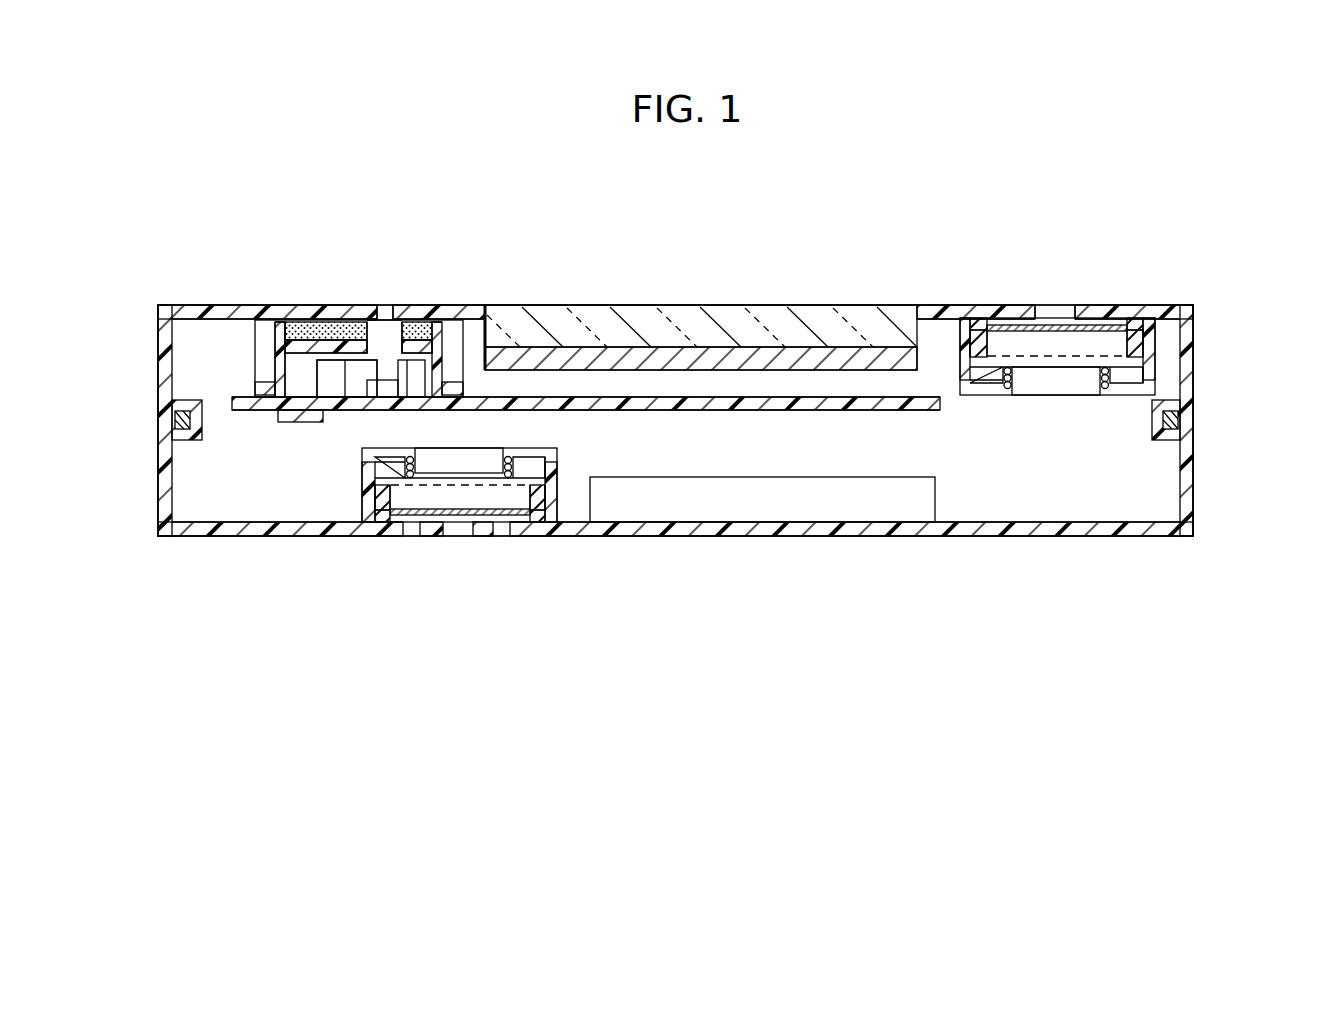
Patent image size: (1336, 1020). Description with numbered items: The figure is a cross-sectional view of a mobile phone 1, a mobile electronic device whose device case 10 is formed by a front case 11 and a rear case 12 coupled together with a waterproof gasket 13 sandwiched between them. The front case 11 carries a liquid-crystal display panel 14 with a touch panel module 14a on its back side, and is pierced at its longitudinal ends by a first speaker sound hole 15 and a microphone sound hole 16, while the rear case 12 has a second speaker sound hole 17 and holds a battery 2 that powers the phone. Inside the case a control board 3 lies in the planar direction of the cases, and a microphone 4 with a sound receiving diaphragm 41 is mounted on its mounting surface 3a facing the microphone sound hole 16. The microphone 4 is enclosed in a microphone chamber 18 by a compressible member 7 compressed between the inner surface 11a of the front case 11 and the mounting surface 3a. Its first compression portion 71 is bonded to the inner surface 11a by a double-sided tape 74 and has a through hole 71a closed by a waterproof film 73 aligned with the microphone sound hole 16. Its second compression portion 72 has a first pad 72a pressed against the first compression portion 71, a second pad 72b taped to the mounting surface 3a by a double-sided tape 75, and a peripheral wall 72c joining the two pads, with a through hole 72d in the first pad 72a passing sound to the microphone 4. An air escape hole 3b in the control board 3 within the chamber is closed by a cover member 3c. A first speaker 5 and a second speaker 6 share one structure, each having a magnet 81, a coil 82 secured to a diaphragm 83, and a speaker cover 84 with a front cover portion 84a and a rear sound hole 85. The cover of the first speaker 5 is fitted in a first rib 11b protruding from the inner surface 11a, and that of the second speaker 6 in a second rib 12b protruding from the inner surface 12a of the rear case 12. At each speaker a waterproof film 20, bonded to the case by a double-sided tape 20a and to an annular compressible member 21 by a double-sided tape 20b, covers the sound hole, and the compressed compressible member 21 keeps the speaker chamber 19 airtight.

The mobile phone 1 is at (1037, 148).
The battery 2 is at (770, 500).
The control board 3 is at (805, 405).
The mounting surface 3a is at (660, 395).
The air escape hole 3b is at (280, 412).
The cover member 3c is at (300, 422).
The microphone 4 is at (440, 365).
The sound receiving diaphragm 41 is at (345, 397).
The first speaker 5 is at (1061, 405).
The second speaker 6 is at (566, 450).
The compressible member 7 is at (170, 198).
The first compression portion 71 is at (262, 314).
The through hole 71a is at (372, 318).
The second compression portion 72 is at (266, 358).
The first pad 72a is at (280, 336).
The second pad 72b is at (262, 395).
The peripheral wall 72c is at (268, 372).
The through hole 72d is at (392, 386).
The waterproof film 73 is at (398, 318).
The double-sided tape 74 is at (320, 330).
The double-sided tape 75 is at (262, 390).
The device case 10 is at (1300, 352).
The front case 11 is at (165, 350).
The inner surface 11a is at (178, 322).
The first rib 11b is at (963, 335).
The rear case 12 is at (165, 455).
The inner surface 12a is at (1000, 525).
The second rib 12b is at (365, 470).
The waterproof gasket 13 is at (180, 420).
The liquid-crystal display panel 14 is at (597, 323).
The touch panel module 14a is at (748, 358).
The first speaker sound hole 15 is at (1040, 316).
The microphone sound hole 16 is at (385, 308).
The second speaker sound hole 17 is at (430, 536).
The microphone chamber 18 is at (300, 345).
The speaker chamber 19 is at (1065, 326).
The waterproof film 20 is at (985, 340).
The double-sided tape 20a is at (978, 345).
The double-sided tape 20b is at (975, 320).
The compressible member 21 is at (972, 322).
The magnet 81 is at (1045, 395).
The coil 82 is at (1010, 388).
The diaphragm 83 is at (1128, 372).
The speaker cover 84 is at (970, 385).
The front cover portion 84a is at (1105, 326).
The rear sound hole 85 is at (990, 385).